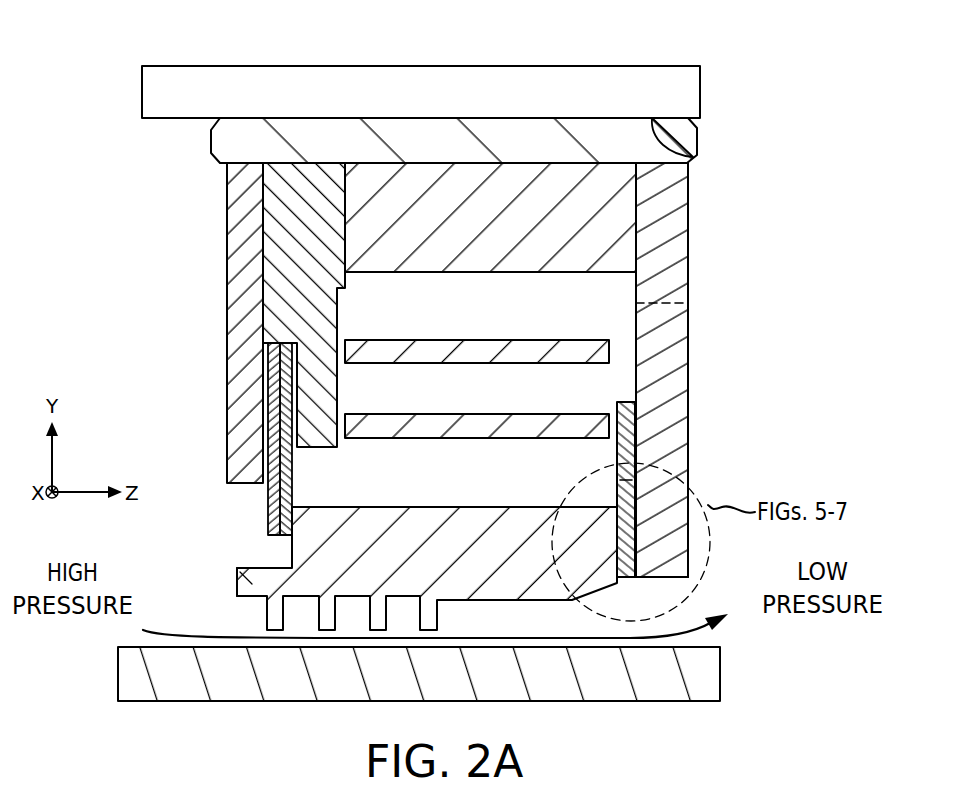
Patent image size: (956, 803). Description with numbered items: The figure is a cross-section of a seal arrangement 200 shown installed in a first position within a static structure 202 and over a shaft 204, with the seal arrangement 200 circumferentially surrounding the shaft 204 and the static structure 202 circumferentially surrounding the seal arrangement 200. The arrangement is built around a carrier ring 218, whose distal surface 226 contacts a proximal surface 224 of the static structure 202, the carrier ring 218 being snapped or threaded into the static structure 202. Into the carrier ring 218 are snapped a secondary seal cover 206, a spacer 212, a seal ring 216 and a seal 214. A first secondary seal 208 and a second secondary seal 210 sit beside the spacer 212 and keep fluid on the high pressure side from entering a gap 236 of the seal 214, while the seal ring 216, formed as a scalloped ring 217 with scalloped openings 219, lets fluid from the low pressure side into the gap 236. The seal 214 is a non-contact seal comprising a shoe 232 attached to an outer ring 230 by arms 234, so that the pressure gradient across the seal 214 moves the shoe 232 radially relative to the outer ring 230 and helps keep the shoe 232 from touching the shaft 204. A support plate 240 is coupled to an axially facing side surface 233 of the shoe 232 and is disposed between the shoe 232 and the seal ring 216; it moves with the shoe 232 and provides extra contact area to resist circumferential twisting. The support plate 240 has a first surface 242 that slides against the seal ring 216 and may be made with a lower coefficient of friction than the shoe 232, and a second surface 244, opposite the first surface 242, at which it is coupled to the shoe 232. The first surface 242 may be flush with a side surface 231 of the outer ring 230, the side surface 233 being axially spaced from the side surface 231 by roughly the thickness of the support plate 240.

The seal arrangement 200 is at (788, 92).
The static structure 202 is at (277, 88).
The shaft 204 is at (720, 672).
The secondary seal cover 206 is at (228, 380).
The first secondary seal 208 is at (284, 528).
The second secondary seal 210 is at (268, 507).
The spacer 212 is at (293, 279).
The seal 214 is at (252, 582).
The seal ring 216 is at (688, 386).
The scalloped ring 217 is at (688, 345).
The carrier ring 218 is at (697, 140).
The scalloped openings 219 is at (680, 303).
The proximal surface 224 is at (653, 120).
The distal surface 226 is at (447, 117).
The outer ring 230 is at (494, 231).
The side surface 231 is at (636, 243).
The shoe 232 is at (493, 569).
The side surface 233 is at (620, 548).
The arms 234 is at (553, 413).
The gap 236 is at (377, 504).
The support plate 240 is at (628, 487).
The first surface 242 is at (637, 420).
The second surface 244 is at (618, 517).